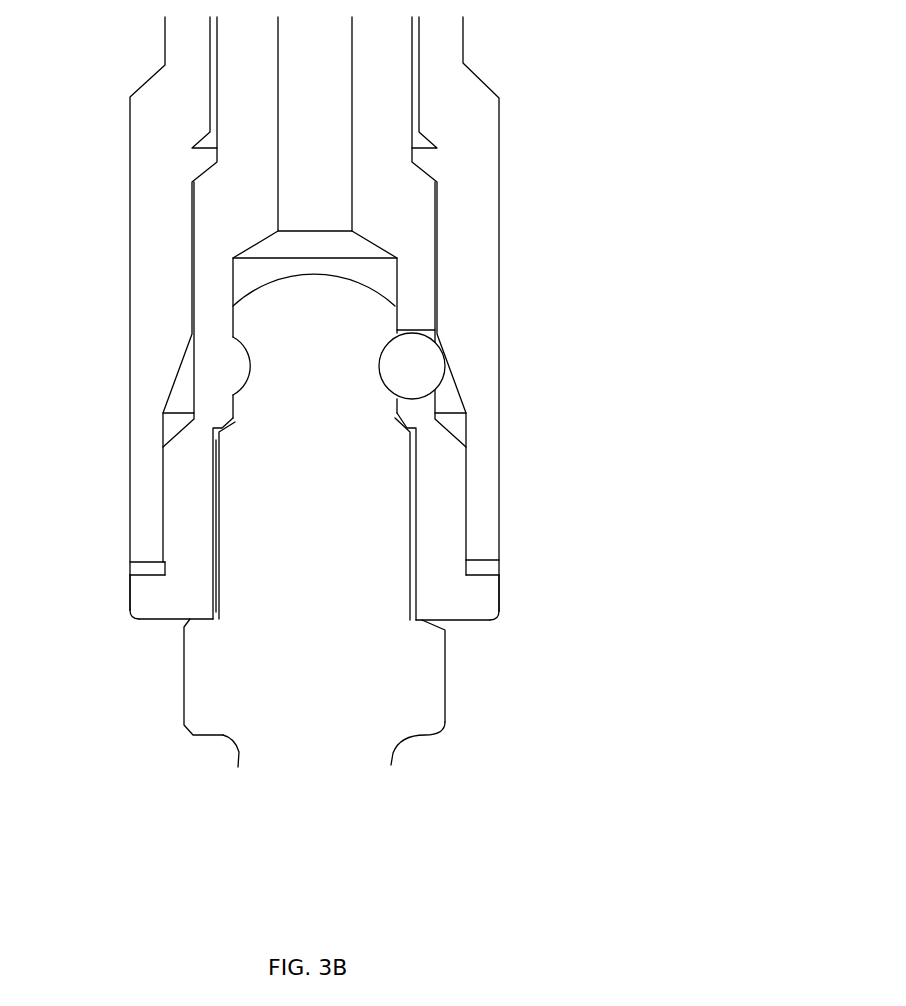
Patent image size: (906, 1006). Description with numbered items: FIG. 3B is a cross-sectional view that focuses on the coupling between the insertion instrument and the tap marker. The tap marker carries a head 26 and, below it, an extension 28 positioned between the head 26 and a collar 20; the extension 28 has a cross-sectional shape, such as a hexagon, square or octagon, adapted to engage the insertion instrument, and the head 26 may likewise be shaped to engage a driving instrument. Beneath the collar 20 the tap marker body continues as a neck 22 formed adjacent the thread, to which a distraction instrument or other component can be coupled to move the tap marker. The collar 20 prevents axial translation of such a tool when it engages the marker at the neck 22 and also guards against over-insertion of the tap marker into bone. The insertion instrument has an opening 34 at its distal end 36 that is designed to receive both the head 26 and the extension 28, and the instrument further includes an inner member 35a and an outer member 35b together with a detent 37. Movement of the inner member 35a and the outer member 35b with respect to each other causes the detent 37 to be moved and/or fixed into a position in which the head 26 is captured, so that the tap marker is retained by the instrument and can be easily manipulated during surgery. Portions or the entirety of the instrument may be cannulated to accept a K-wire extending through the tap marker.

The collar 20 is at (428, 670).
The neck 22 is at (370, 757).
The head 26 is at (330, 310).
The extension 28 is at (360, 478).
The opening 34 is at (215, 597).
The inner member 35a is at (440, 487).
The outer member 35b is at (475, 283).
The distal end 36 is at (143, 618).
The detent 37 is at (425, 362).